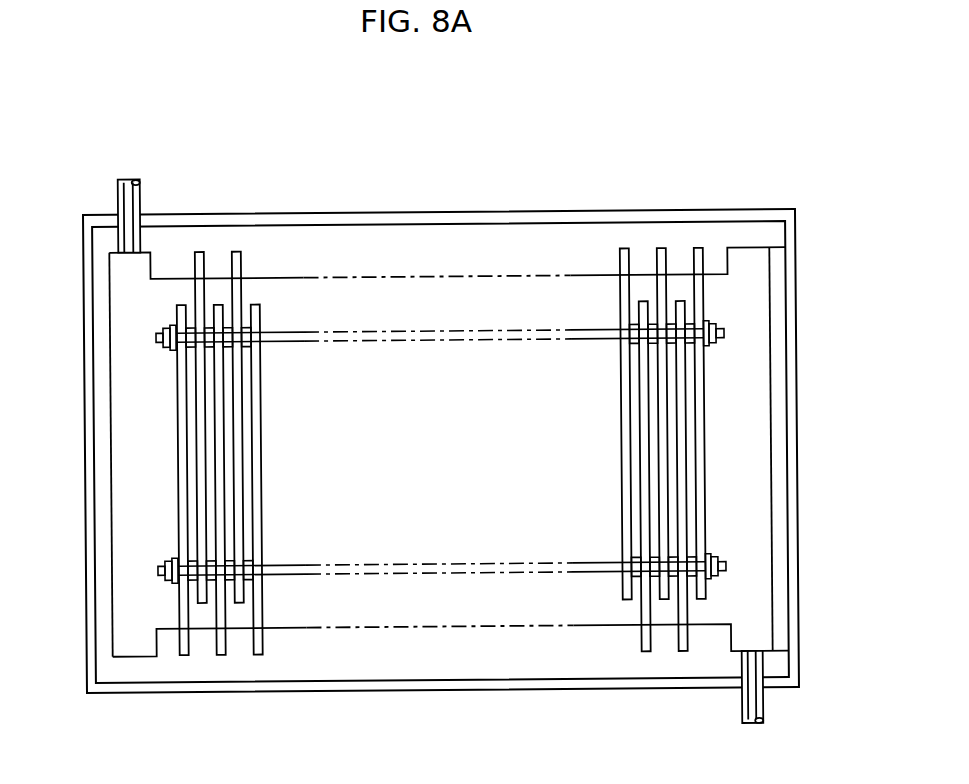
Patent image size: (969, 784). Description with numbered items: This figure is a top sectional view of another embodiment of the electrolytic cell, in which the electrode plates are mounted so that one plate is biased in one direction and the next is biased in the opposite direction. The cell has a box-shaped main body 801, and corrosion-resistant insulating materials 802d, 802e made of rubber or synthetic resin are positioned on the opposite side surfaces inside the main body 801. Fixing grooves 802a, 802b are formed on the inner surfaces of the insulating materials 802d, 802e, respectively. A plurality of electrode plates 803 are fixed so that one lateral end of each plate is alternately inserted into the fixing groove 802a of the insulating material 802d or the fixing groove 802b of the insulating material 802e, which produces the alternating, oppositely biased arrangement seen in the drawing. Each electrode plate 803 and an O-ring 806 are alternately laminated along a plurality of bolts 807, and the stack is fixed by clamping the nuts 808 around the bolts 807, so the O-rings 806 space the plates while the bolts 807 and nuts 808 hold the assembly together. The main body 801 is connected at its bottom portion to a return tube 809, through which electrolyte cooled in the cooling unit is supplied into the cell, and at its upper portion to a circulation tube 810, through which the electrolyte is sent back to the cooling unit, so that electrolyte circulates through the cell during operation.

The main body 801 is at (793, 323).
The fixing groove 802a is at (253, 652).
The fixing groove 802b is at (630, 253).
The insulating material 802d is at (515, 663).
The insulating material 802e is at (398, 242).
The electrode plate 803 is at (253, 318).
The O-ring 806 is at (242, 346).
The bolt 807 is at (433, 338).
The nut 808 is at (712, 562).
The return tube 809 is at (755, 700).
The circulation tube 810 is at (128, 209).